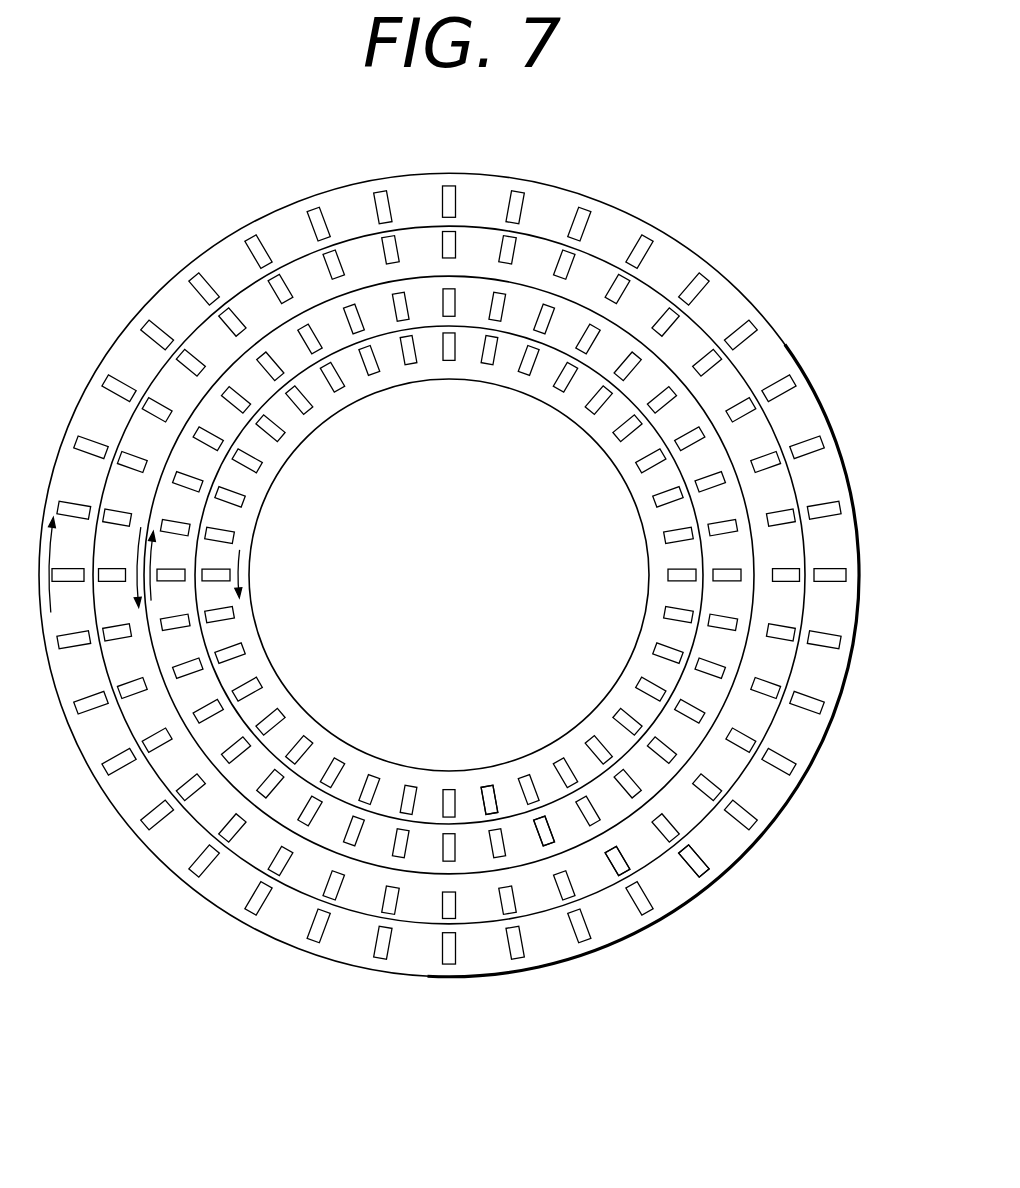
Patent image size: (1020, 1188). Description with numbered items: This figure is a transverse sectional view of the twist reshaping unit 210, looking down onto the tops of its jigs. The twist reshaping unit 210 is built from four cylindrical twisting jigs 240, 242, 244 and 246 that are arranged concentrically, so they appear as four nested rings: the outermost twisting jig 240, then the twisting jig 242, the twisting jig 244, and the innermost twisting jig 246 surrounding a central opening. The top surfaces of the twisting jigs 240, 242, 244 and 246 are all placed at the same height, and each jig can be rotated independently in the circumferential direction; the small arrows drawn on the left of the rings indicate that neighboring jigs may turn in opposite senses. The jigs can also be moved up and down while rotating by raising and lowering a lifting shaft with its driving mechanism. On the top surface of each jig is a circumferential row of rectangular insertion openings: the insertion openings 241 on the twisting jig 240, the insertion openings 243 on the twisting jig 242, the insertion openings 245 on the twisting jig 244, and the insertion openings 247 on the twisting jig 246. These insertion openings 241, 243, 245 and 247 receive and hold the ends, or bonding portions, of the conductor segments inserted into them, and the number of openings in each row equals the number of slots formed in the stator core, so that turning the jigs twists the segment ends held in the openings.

The twist reshaping unit 210 is at (474, 547).
The twisting jig 240 is at (678, 258).
The twisting jig 242 is at (693, 333).
The twisting jig 244 is at (683, 407).
The twisting jig 246 is at (667, 473).
The insertion openings 241 is at (682, 863).
The insertion openings 243 is at (612, 860).
The insertion openings 245 is at (543, 835).
The insertion openings 247 is at (482, 808).